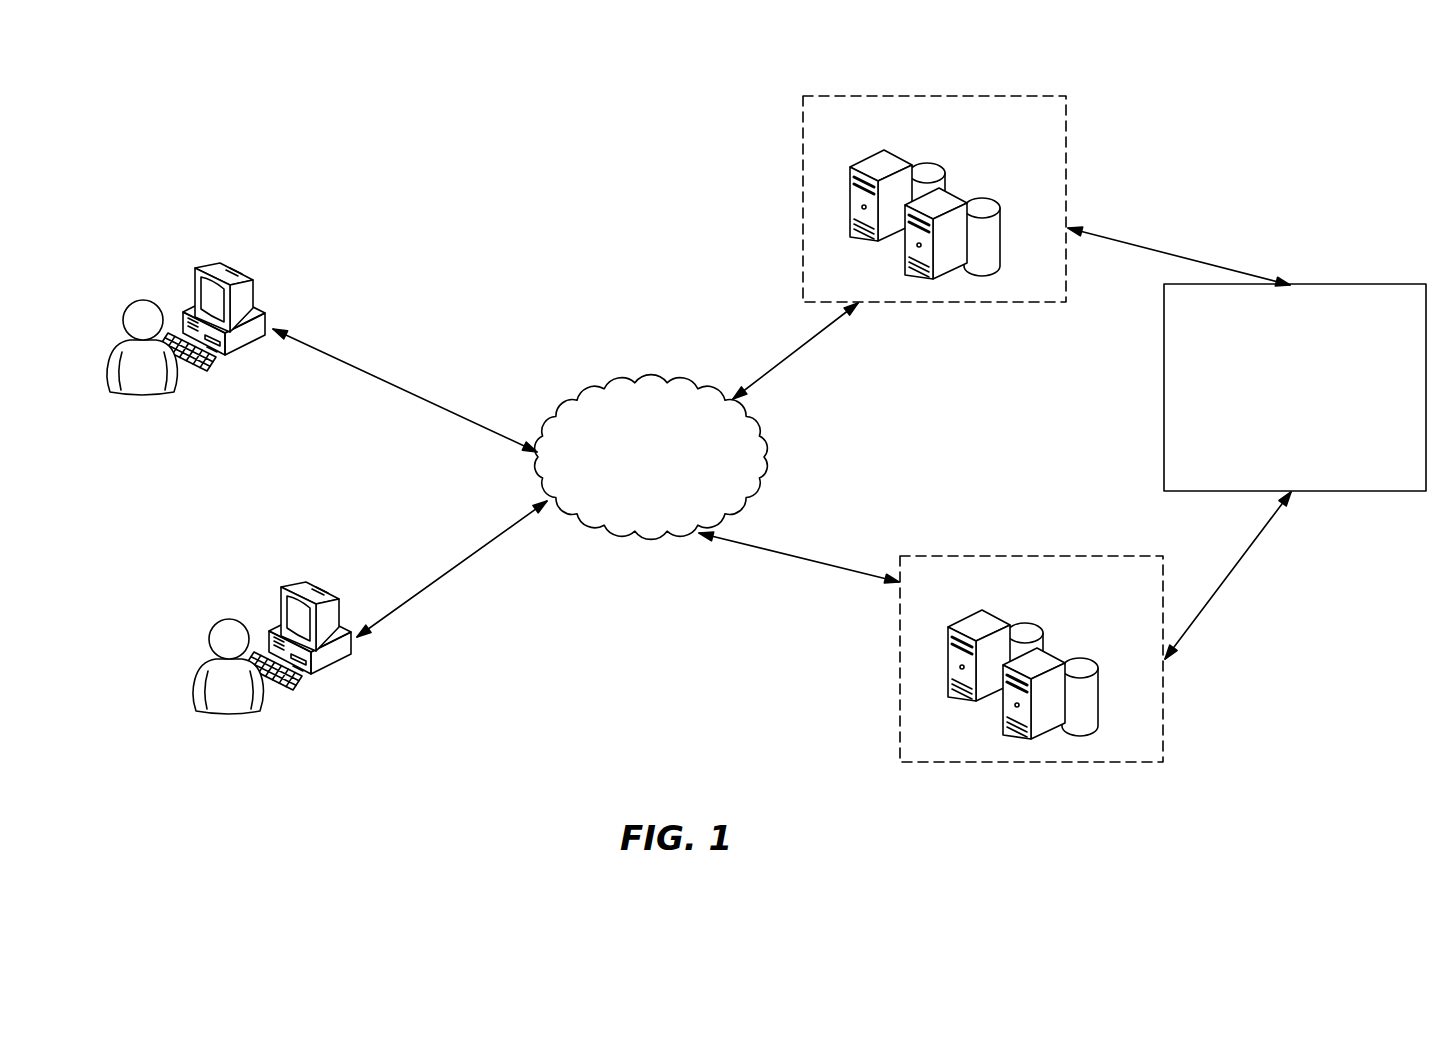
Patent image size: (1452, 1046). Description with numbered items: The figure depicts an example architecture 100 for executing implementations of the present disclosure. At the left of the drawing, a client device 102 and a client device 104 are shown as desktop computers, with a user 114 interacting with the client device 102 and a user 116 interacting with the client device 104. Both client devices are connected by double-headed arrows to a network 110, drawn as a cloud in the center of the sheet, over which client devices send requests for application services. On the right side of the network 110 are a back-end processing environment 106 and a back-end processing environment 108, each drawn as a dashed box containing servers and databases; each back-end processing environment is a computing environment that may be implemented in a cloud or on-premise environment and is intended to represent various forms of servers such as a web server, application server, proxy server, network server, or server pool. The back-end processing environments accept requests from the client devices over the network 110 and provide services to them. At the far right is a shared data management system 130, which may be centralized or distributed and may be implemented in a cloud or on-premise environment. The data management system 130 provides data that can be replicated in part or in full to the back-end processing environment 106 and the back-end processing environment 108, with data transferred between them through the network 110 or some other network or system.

The architecture 100 is at (503, 146).
The client device 102 is at (195, 268).
The client device 104 is at (281, 587).
The back-end processing environment 106 is at (1067, 186).
The back-end processing environment 108 is at (901, 660).
The network 110 is at (648, 382).
The user 114 is at (143, 395).
The user 116 is at (229, 714).
The shared data management system 130 is at (1295, 387).